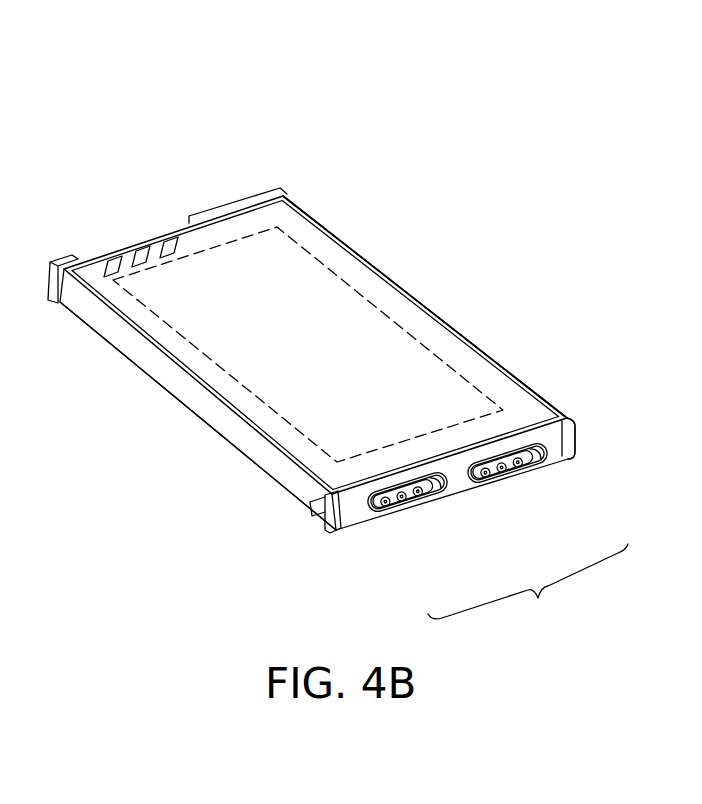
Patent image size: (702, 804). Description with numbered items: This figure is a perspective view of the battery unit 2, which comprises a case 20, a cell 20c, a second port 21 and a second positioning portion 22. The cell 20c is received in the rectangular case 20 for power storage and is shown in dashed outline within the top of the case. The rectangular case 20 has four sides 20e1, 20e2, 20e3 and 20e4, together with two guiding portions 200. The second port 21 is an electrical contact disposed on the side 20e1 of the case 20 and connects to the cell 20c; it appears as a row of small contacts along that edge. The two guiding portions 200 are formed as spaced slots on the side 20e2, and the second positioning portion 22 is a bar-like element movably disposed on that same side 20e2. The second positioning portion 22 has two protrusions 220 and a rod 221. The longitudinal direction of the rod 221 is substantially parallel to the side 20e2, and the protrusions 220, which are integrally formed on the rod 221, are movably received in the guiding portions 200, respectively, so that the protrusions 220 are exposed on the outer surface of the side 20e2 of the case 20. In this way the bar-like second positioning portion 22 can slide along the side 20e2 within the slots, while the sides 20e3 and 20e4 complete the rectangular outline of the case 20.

The battery unit 2 is at (48, 142).
The case 20 is at (223, 385).
The cell 20c is at (390, 318).
The side 20e1 is at (189, 224).
The side 20e2 is at (567, 440).
The side 20e3 is at (253, 443).
The side 20e4 is at (482, 353).
The second port 21 is at (137, 247).
The second positioning portion 22 is at (528, 589).
The guiding portions 200 is at (447, 487).
The protrusions 220 is at (507, 472).
The rod 221 is at (340, 517).